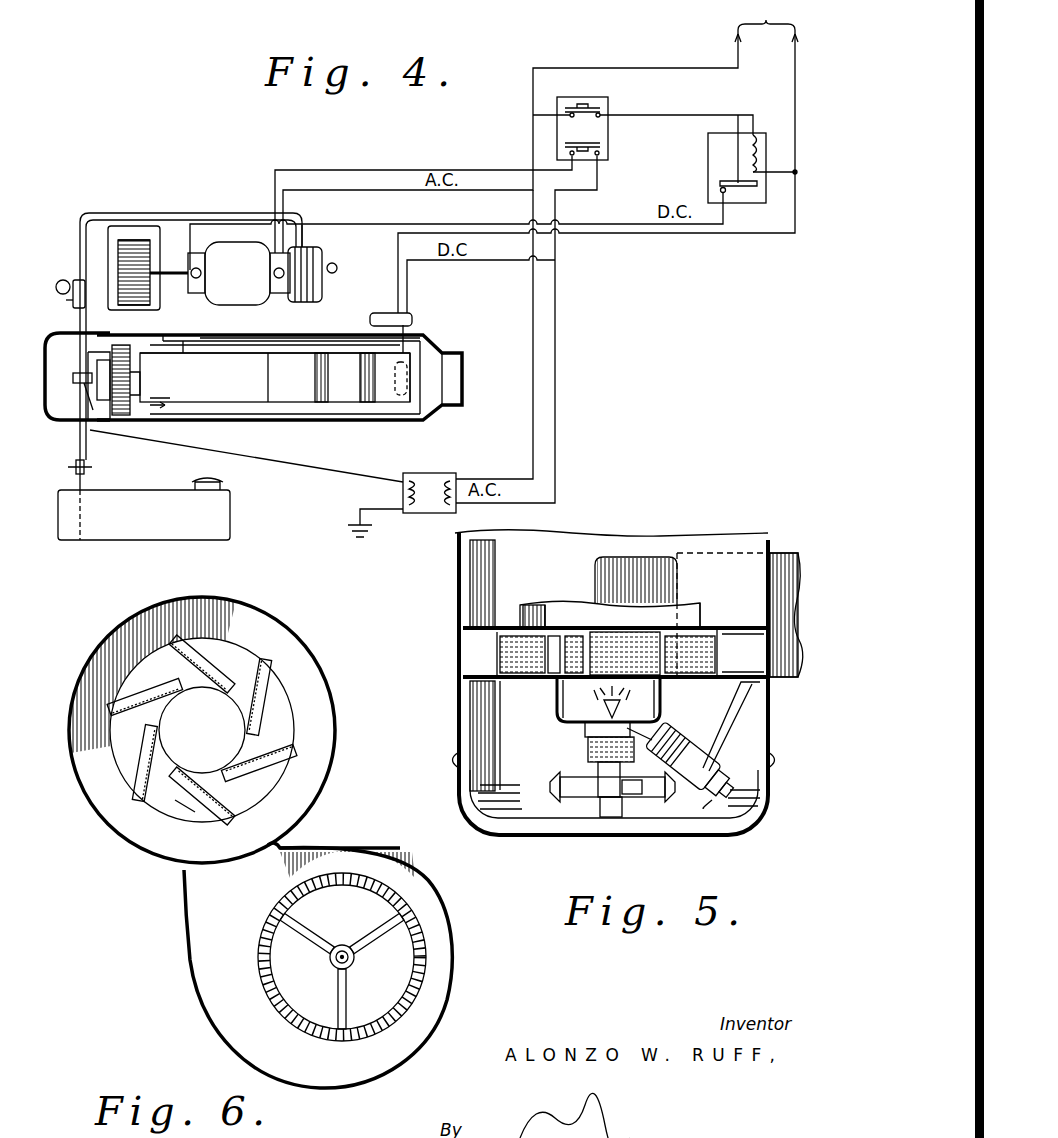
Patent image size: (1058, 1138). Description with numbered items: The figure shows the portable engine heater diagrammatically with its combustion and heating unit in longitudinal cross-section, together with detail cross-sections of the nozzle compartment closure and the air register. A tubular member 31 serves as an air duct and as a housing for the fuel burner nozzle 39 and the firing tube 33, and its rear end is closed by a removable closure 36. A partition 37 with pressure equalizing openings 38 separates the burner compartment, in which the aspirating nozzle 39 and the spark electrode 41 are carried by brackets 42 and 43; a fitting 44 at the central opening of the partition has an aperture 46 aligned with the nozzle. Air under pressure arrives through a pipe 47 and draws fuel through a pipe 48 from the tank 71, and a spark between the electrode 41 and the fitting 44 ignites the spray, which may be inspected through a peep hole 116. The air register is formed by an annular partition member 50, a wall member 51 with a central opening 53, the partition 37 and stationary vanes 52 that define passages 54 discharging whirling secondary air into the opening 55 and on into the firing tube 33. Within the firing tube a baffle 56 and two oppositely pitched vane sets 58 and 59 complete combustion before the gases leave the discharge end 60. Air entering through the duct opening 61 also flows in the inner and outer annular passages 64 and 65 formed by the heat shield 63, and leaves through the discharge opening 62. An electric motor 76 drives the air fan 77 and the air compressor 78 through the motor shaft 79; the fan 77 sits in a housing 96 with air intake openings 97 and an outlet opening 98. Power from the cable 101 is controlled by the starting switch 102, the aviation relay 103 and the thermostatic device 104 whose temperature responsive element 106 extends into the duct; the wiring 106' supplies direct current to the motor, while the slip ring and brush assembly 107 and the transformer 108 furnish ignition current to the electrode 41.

In FIG. 4, the tubular member 31 is at (255, 422).
In FIG. 5, the tubular member 31 is at (770, 548).
In FIG. 6, the tubular member 31 is at (262, 612).
In FIG. 4, the firing tube 33 is at (210, 355).
In FIG. 5, the firing tube 33 is at (520, 605).
In FIG. 5, the removable closure 36 is at (757, 818).
In FIG. 5, the partition 37 is at (510, 684).
In FIG. 5, the pressure equalizing openings 38 is at (473, 668).
In FIG. 4, the fuel burner nozzle 39 is at (73, 383).
In FIG. 5, the fuel burner nozzle 39 is at (590, 748).
In FIG. 4, the spark electrode 41 is at (85, 393).
In FIG. 5, the spark electrode 41 is at (676, 732).
In FIG. 5, the bracket 42 is at (587, 731).
In FIG. 5, the bracket 43 is at (722, 710).
In FIG. 5, the fitting 44 is at (557, 704).
In FIG. 5, the aperture 46 is at (600, 713).
In FIG. 5, the pipe 47 is at (575, 796).
In FIG. 5, the fuel supply pipe 48 is at (645, 797).
In FIG. 5, the annular partition member 50 is at (740, 620).
In FIG. 4, the wall member 51 is at (135, 395).
In FIG. 5, the wall member 51 is at (541, 604).
In FIG. 5, the stationary vanes 52 is at (543, 657).
In FIG. 6, the stationary vanes 52 is at (268, 698).
In FIG. 5, the central opening 53 is at (592, 625).
In FIG. 6, the central opening 53 is at (232, 652).
In FIG. 6, the passages 54 is at (193, 815).
In FIG. 4, the opening 55 is at (132, 375).
In FIG. 6, the opening 55 is at (185, 703).
In FIG. 4, the baffle 56 is at (262, 366).
In FIG. 4, the vane set 58 is at (315, 372).
In FIG. 4, the vane set 59 is at (362, 368).
In FIG. 4, the discharge end 60 is at (412, 414).
In FIG. 4, the duct opening 61 is at (163, 345).
In FIG. 5, the duct opening 61 is at (682, 558).
In FIG. 6, the duct opening 61 is at (292, 828).
In FIG. 4, the discharge opening 62 is at (462, 388).
In FIG. 4, the heat shield 63 is at (310, 343).
In FIG. 4, the inner annular air passage 64 is at (255, 343).
In FIG. 4, the outer annular air passage 65 is at (305, 337).
In FIG. 4, the tank 71 is at (135, 492).
In FIG. 4, the electric motor 76 is at (237, 243).
In FIG. 4, the air fan 77 is at (135, 250).
In FIG. 6, the air fan 77 is at (384, 893).
In FIG. 4, the air compressor 78 is at (338, 270).
In FIG. 4, the motor shaft 79 is at (180, 268).
In FIG. 4, the fan housing 96 is at (113, 232).
In FIG. 6, the fan housing 96 is at (452, 920).
In FIG. 4, the air intake openings 97 is at (165, 268).
In FIG. 4, the outlet opening 98 is at (120, 360).
In FIG. 6, the outlet opening 98 is at (197, 893).
In FIG. 4, the power cable 101 is at (766, 27).
In FIG. 4, the starting switch 102 is at (546, 138).
In FIG. 4, the aviation relay 103 is at (702, 157).
In FIG. 4, the thermostatic device 104 is at (378, 313).
In FIG. 4, the temperature responsive element 106 is at (400, 382).
In FIG. 4, the wiring 106' is at (334, 239).
In FIG. 4, the slip ring and brush assembly 107 is at (274, 273).
In FIG. 4, the transformer 108 is at (436, 467).
In FIG. 5, the peep hole 116 is at (452, 752).